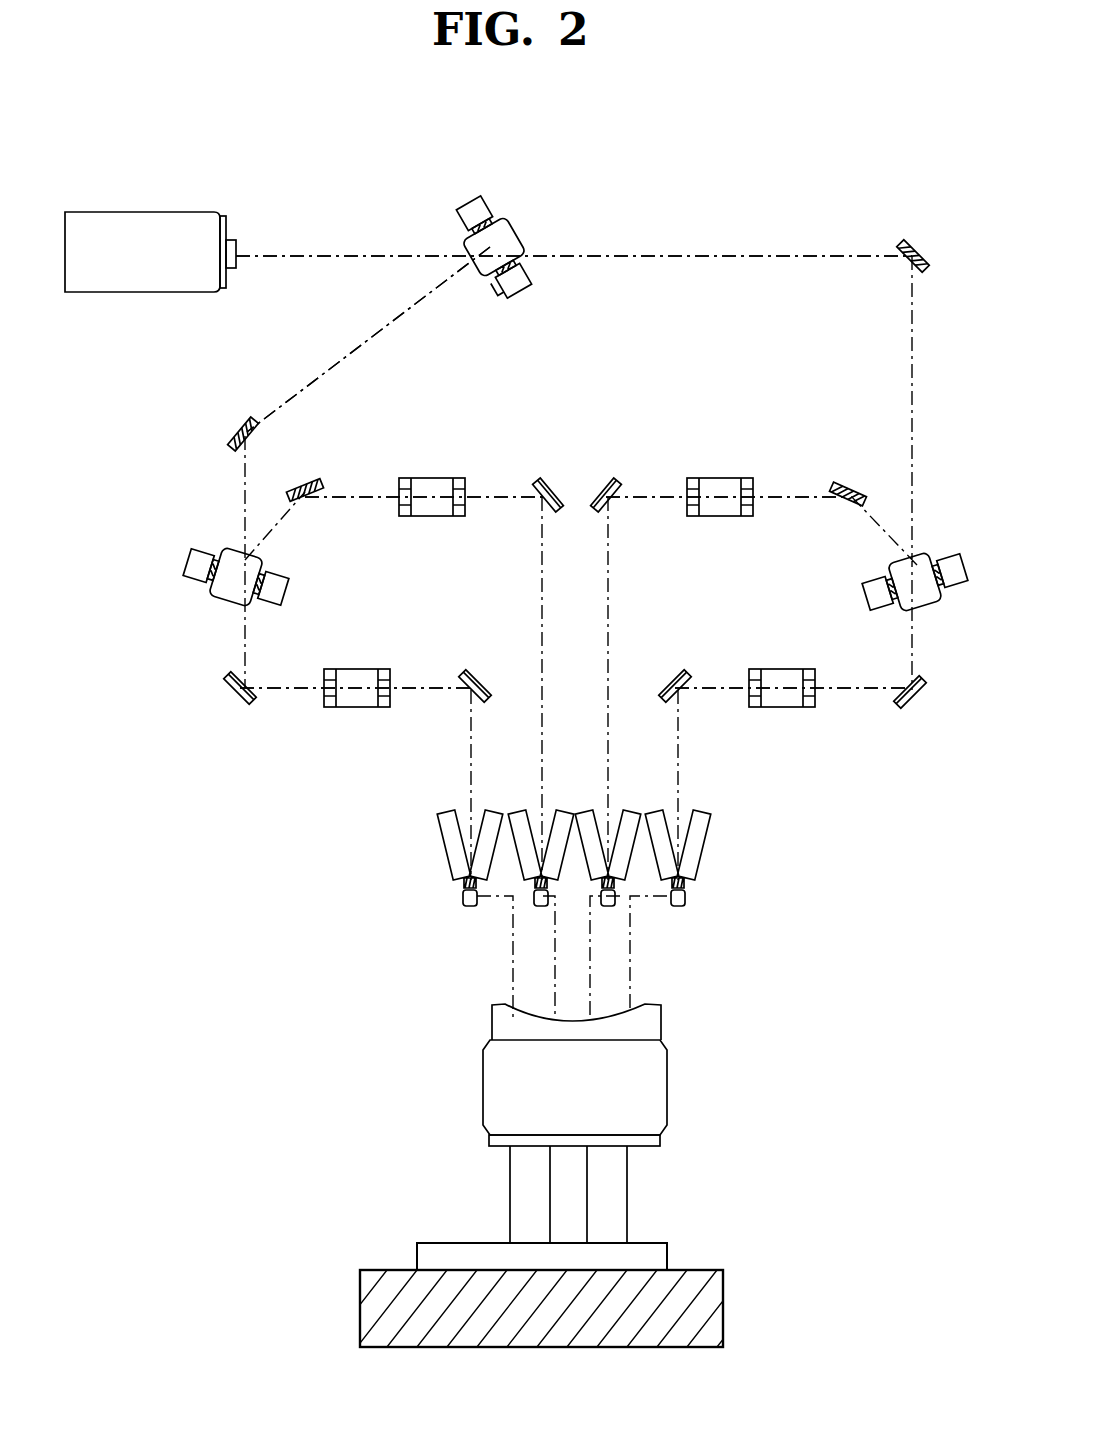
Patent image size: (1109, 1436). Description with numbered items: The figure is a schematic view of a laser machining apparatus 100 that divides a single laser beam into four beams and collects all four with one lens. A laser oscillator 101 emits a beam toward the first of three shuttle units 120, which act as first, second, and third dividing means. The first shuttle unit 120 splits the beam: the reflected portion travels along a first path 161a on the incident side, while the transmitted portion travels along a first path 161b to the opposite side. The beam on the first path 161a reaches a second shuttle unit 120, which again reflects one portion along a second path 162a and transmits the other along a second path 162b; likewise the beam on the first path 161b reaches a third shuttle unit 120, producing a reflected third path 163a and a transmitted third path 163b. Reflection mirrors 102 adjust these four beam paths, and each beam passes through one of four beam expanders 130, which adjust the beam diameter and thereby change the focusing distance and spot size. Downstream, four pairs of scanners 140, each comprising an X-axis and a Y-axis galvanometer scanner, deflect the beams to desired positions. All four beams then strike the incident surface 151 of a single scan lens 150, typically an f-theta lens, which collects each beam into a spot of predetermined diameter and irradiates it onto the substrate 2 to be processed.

The laser machining apparatus 100 is at (331, 190).
The laser oscillator 101 is at (172, 238).
The reflection mirror 102 is at (917, 247).
The shuttle unit 120 is at (512, 232).
The beam expander 130 is at (437, 478).
The pair of scanners 140 is at (513, 812).
The single scan lens 150 is at (655, 1089).
The incident surface 151 is at (605, 1013).
The first path 161a is at (396, 334).
The first path 161b is at (718, 256).
The second path 162a is at (347, 500).
The second path 162b is at (288, 700).
The third path 163a is at (798, 500).
The third path 163b is at (857, 700).
The substrate 2 is at (659, 1257).